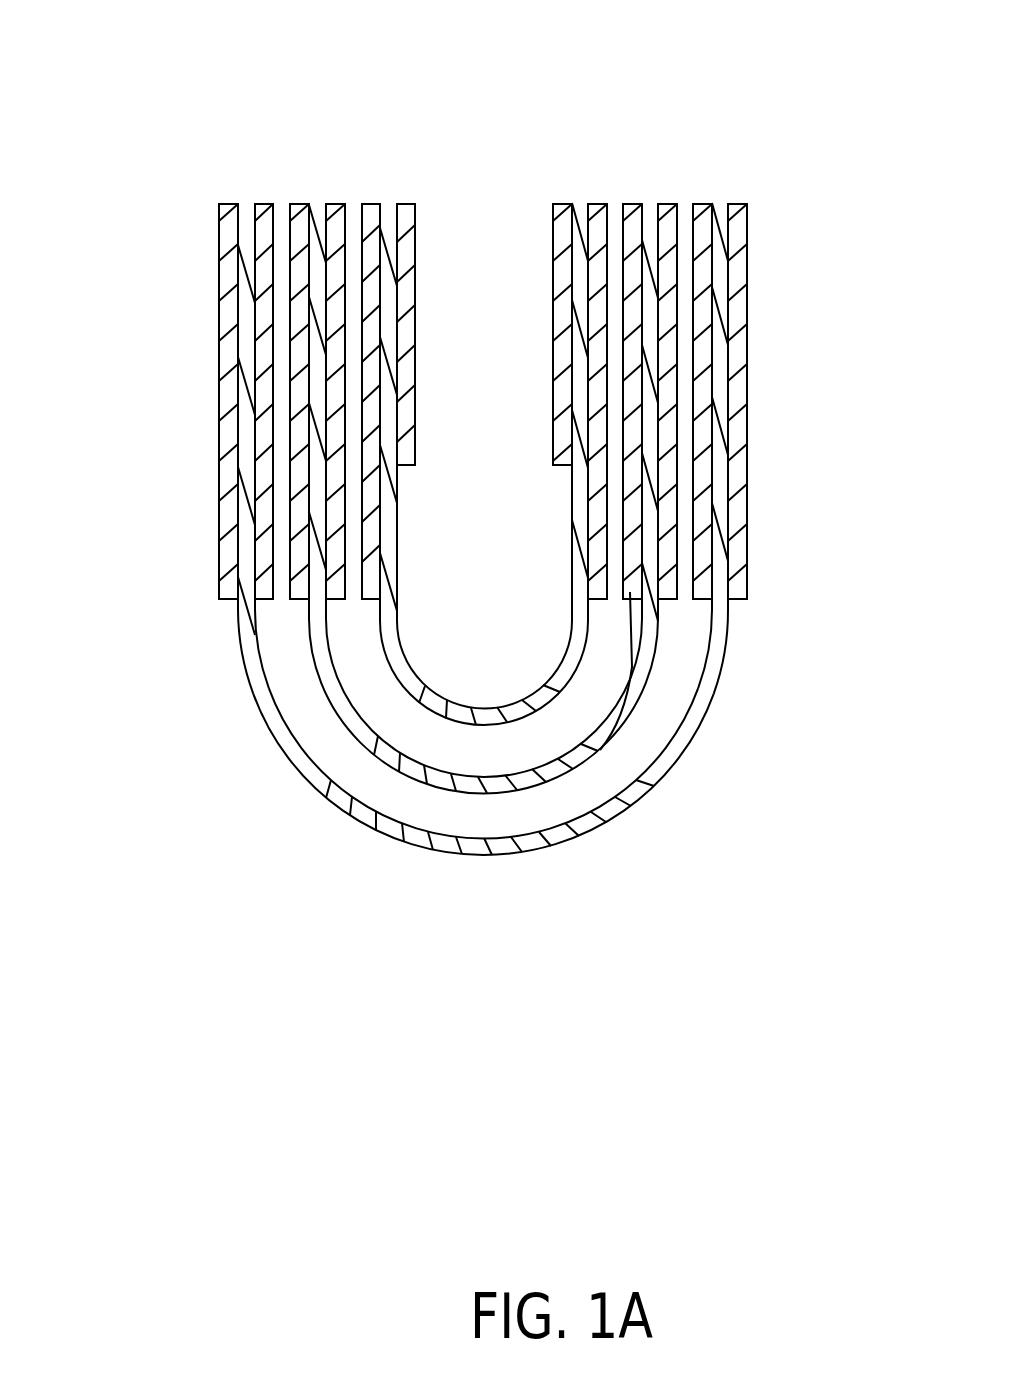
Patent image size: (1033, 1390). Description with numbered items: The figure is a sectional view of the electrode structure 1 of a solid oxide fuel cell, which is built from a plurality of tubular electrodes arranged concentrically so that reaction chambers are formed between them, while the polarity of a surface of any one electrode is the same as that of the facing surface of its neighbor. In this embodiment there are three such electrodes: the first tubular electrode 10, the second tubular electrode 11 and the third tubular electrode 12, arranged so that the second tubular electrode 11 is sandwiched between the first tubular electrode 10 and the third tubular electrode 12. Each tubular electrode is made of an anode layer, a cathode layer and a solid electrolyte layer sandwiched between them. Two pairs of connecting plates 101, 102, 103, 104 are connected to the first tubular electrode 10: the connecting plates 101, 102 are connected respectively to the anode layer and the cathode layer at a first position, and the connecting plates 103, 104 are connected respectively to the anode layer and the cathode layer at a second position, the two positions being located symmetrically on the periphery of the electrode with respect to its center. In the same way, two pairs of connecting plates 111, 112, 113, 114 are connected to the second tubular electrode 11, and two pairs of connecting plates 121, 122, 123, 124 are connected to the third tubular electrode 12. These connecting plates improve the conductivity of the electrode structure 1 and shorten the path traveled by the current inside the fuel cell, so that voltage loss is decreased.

The electrode structure 1 is at (138, 112).
The first tubular electrode 10 is at (485, 770).
The second tubular electrode 11 is at (478, 785).
The third tubular electrode 12 is at (550, 695).
The connecting plate 101 is at (228, 587).
The connecting plate 102 is at (270, 625).
The connecting plate 103 is at (740, 545).
The connecting plate 104 is at (700, 597).
The connecting plate 111 is at (300, 600).
The connecting plate 112 is at (330, 620).
The connecting plate 113 is at (698, 682).
The connecting plate 114 is at (650, 590).
The connecting plate 121 is at (372, 525).
The connecting plate 122 is at (405, 447).
The connecting plate 123 is at (600, 568).
The connecting plate 124 is at (558, 368).